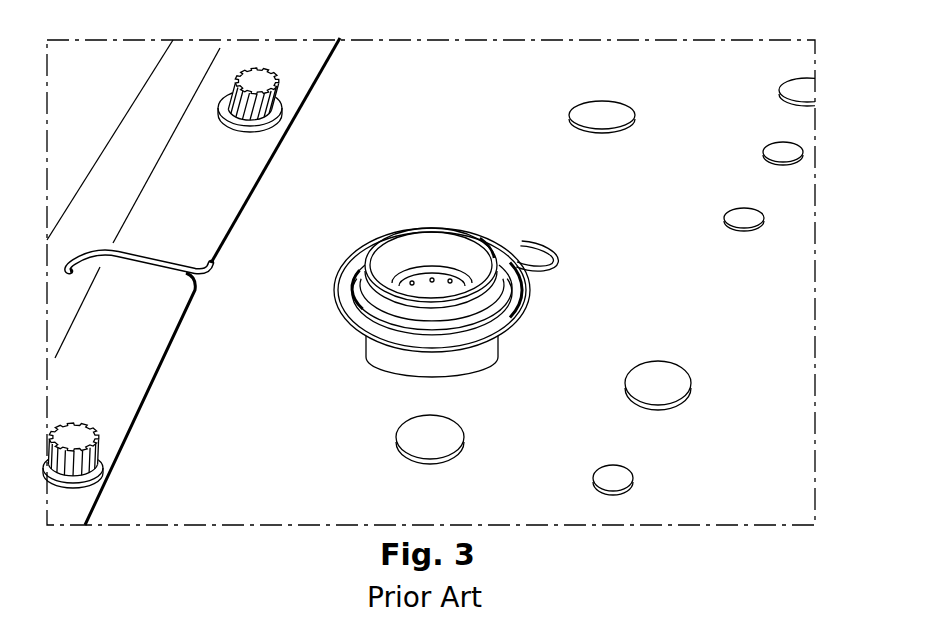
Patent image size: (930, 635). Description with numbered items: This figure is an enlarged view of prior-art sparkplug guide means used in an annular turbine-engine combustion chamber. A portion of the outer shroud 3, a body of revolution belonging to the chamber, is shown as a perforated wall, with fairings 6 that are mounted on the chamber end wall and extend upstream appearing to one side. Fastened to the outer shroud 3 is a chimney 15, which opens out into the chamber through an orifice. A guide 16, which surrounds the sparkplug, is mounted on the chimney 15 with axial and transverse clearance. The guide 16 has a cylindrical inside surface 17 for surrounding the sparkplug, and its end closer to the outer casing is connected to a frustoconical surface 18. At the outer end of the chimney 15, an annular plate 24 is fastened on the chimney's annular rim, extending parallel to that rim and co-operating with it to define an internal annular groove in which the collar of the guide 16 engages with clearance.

The outer shroud 3 is at (520, 78).
The fairings 6 is at (128, 152).
The chimney 15 is at (395, 362).
The guide 16 is at (424, 242).
The cylindrical inside surface 17 is at (410, 275).
The frustoconical surface 18 is at (456, 248).
The annular plate 24 is at (510, 288).